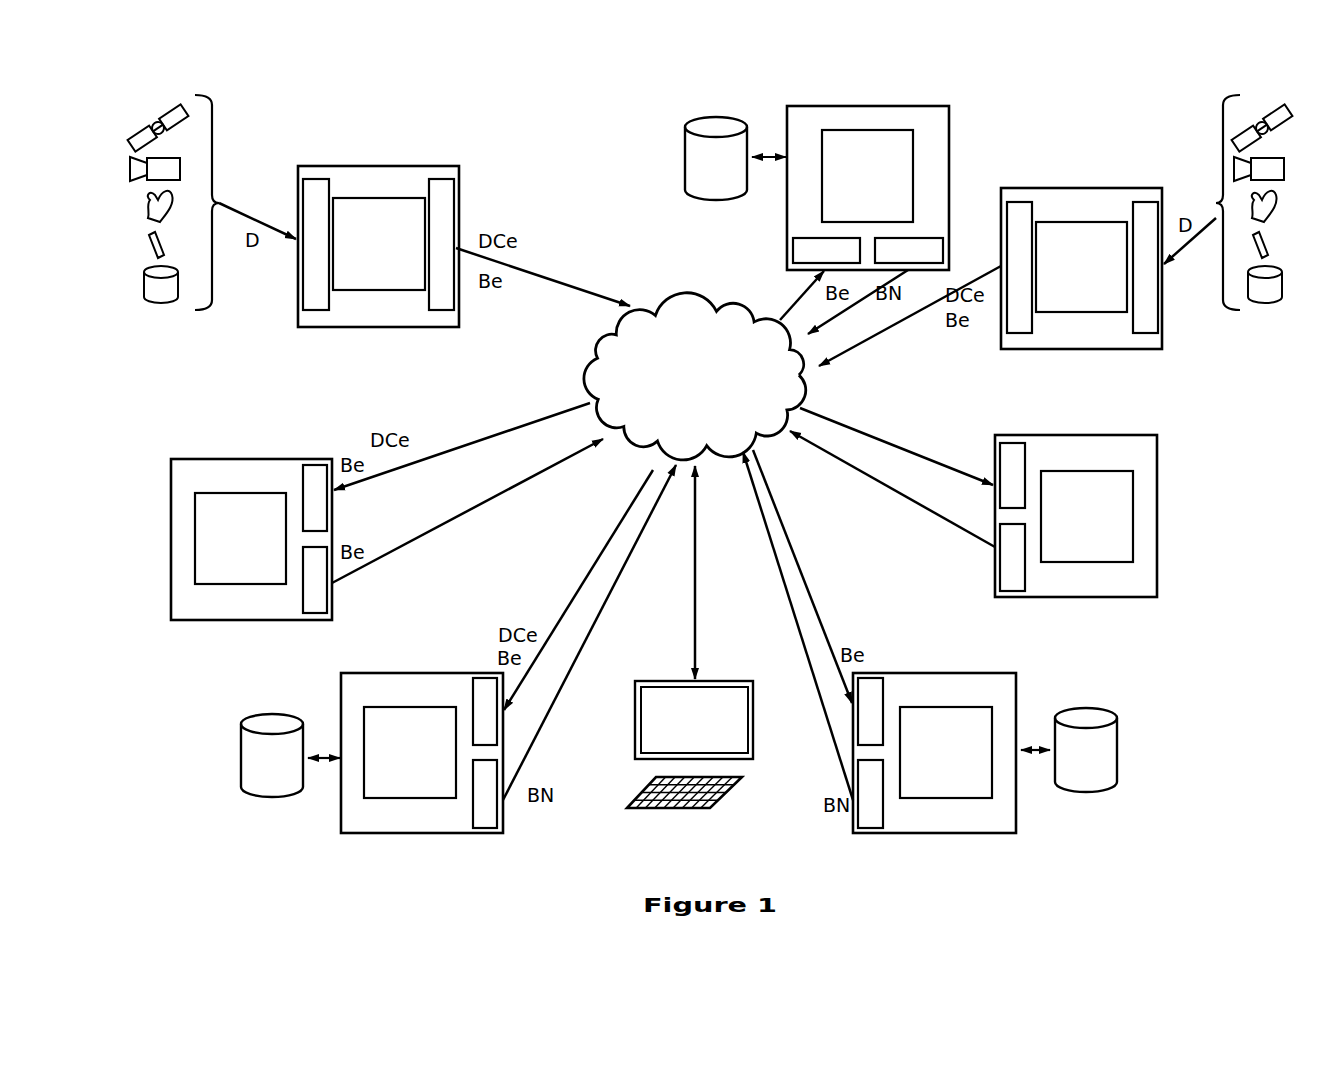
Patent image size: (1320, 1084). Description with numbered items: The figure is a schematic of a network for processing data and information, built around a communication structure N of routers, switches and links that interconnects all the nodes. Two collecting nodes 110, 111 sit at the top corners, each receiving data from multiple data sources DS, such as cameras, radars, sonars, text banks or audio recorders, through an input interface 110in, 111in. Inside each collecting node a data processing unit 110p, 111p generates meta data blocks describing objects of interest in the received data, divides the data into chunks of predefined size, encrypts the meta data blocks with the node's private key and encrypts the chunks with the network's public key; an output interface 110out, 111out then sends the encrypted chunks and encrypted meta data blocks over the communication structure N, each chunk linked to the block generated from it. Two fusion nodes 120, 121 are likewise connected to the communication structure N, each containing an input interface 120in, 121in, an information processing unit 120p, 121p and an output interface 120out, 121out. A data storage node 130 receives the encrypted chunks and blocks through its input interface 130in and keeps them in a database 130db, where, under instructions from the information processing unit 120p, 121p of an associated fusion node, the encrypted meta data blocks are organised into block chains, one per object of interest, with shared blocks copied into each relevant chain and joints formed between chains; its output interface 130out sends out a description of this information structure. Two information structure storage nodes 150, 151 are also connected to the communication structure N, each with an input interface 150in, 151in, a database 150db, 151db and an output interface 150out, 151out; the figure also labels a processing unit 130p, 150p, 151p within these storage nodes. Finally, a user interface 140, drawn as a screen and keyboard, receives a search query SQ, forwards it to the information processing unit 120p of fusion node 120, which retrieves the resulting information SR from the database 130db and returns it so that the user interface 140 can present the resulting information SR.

The collecting node 110 is at (375, 166).
The input interface 110in is at (310, 180).
The output interface 110out is at (493, 220).
The data processing unit 110p is at (375, 290).
The collecting node 111 is at (1083, 187).
The input interface 111in is at (1143, 202).
The output interface 111out is at (1000, 312).
The data processing unit 111p is at (1085, 312).
The fusion node 120 is at (210, 459).
The input interface 120in is at (315, 465).
The output interface 120out is at (315, 613).
The information processing unit 120p is at (225, 585).
The fusion node 121 is at (1251, 594).
The input interface 121in is at (995, 455).
The output interface 121out is at (995, 560).
The information processing unit 121p is at (1112, 565).
The data storage node 130 is at (403, 673).
The input interface 130in is at (485, 678).
The output interface 130out is at (472, 800).
The processor of node 130 130p is at (364, 785).
The database 130db is at (248, 795).
The user interface 140 is at (665, 762).
The information structure storage node 150 is at (1009, 661).
The input interface 150in is at (907, 684).
The output interface 150out is at (919, 815).
The processor of node 150 150p is at (983, 785).
The database 150db is at (1120, 760).
The information structure storage node 151 is at (787, 225).
The processor of node 151 151p is at (932, 169).
The input interface 151in is at (793, 255).
The output interface 151out is at (963, 209).
The database 151db is at (685, 165).
The communication structure N is at (667, 310).
The data sources DS is at (152, 312).
The resulting information SR is at (694, 710).
The search query SQ is at (713, 572).